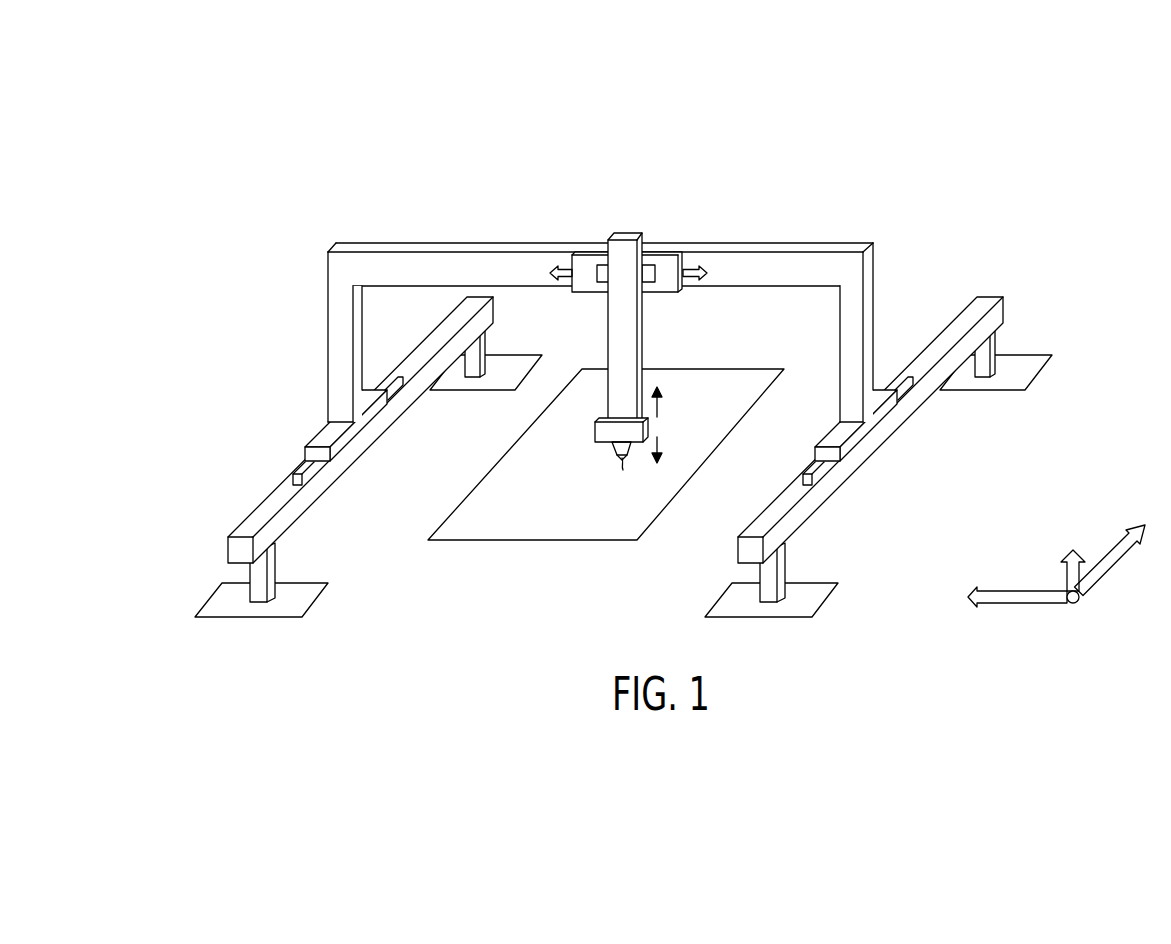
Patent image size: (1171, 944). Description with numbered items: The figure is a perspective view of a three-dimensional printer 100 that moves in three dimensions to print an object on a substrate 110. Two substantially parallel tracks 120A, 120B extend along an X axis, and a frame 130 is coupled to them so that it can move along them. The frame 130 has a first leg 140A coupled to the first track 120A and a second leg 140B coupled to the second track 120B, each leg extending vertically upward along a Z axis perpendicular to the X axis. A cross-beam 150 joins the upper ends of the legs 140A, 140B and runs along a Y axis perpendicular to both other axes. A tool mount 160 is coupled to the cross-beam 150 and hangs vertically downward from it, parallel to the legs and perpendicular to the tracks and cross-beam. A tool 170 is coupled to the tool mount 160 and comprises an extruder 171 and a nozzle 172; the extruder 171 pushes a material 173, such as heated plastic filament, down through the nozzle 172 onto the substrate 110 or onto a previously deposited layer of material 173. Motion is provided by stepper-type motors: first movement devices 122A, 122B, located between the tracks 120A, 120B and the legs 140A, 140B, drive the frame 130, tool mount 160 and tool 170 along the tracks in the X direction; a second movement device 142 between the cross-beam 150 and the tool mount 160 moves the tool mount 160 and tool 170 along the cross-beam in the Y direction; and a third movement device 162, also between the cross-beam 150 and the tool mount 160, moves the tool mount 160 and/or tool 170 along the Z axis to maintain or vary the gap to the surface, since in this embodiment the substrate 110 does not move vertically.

The 3D printer 100 is at (255, 161).
The substrate 110 is at (527, 541).
The first track 120A is at (810, 503).
The second track 120B is at (255, 522).
The first movement device 122A is at (842, 433).
The first movement device 122B is at (326, 441).
The frame 130 is at (890, 221).
The first leg 140A is at (870, 307).
The second leg 140B is at (330, 345).
The second movement device 142 is at (665, 262).
The cross-beam 150 is at (787, 247).
The tool mount 160 is at (640, 346).
The third movement device 162 is at (604, 265).
The tool 170 is at (666, 427).
The extruder 171 is at (595, 432).
The nozzle 172 is at (612, 452).
The material 173 is at (626, 466).